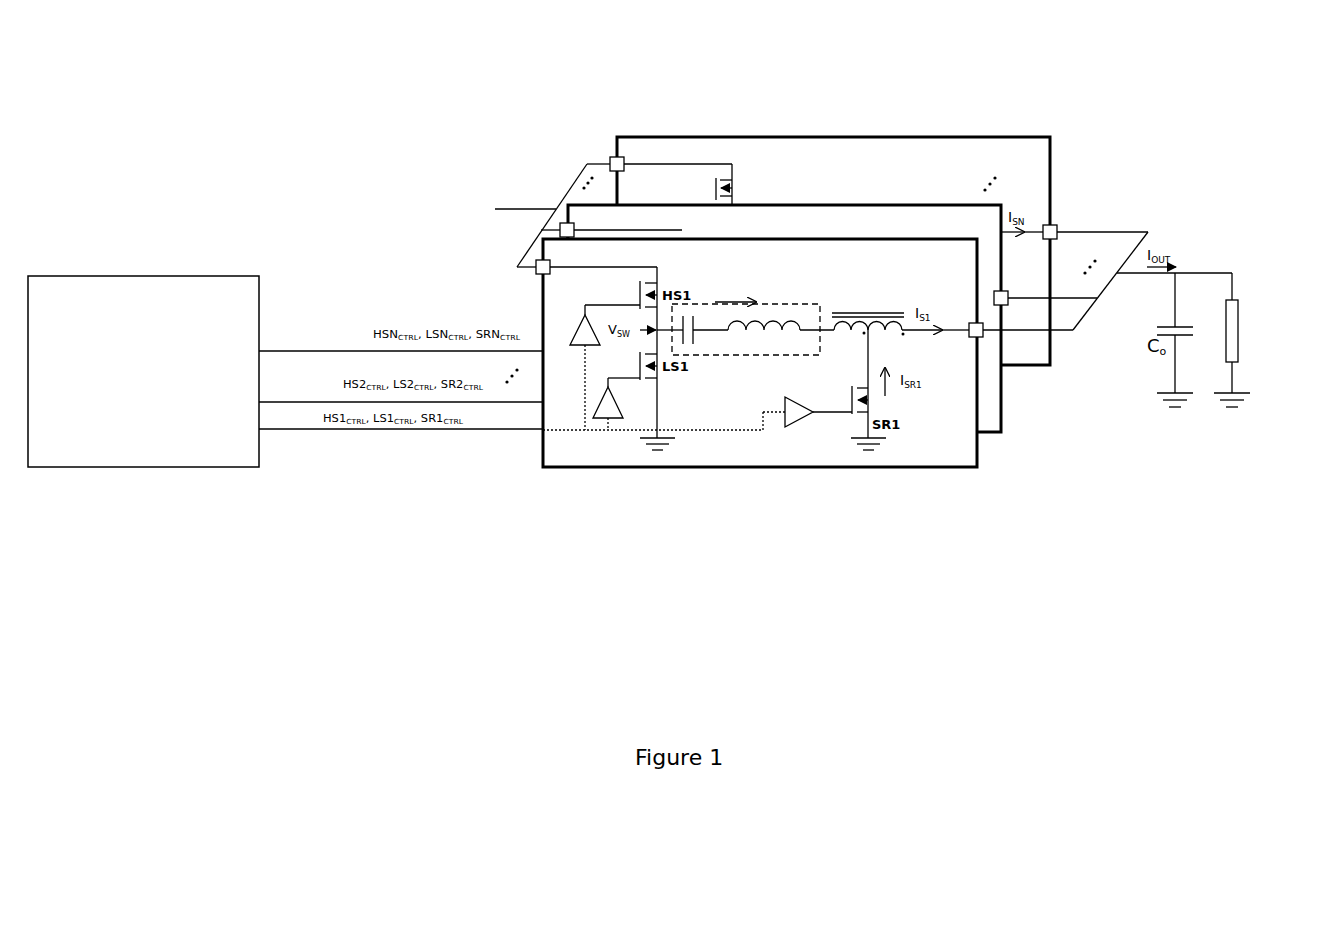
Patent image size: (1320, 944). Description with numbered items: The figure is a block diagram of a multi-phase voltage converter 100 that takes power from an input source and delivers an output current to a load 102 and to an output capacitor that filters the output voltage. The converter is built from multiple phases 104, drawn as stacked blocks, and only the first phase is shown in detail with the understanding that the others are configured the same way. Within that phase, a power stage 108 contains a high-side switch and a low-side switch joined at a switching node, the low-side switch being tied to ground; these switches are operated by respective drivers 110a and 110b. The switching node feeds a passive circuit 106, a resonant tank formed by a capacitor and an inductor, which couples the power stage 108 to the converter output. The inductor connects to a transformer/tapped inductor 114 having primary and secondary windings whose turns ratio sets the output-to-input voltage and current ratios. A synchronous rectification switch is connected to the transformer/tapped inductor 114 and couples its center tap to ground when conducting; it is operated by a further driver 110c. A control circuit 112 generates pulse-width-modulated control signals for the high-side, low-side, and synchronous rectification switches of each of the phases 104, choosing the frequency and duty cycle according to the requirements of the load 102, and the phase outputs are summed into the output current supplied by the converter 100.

The multi-phase voltage converter 100 is at (288, 69).
The load 102 is at (1242, 299).
The phases 104 is at (858, 160).
The passive circuit 106 is at (818, 305).
The power stage 108 is at (594, 450).
The driver 110a is at (579, 333).
The driver 110b is at (622, 397).
The driver 110c is at (796, 410).
The control circuit 112 is at (130, 338).
The transformer/tapped inductor 114 is at (891, 305).